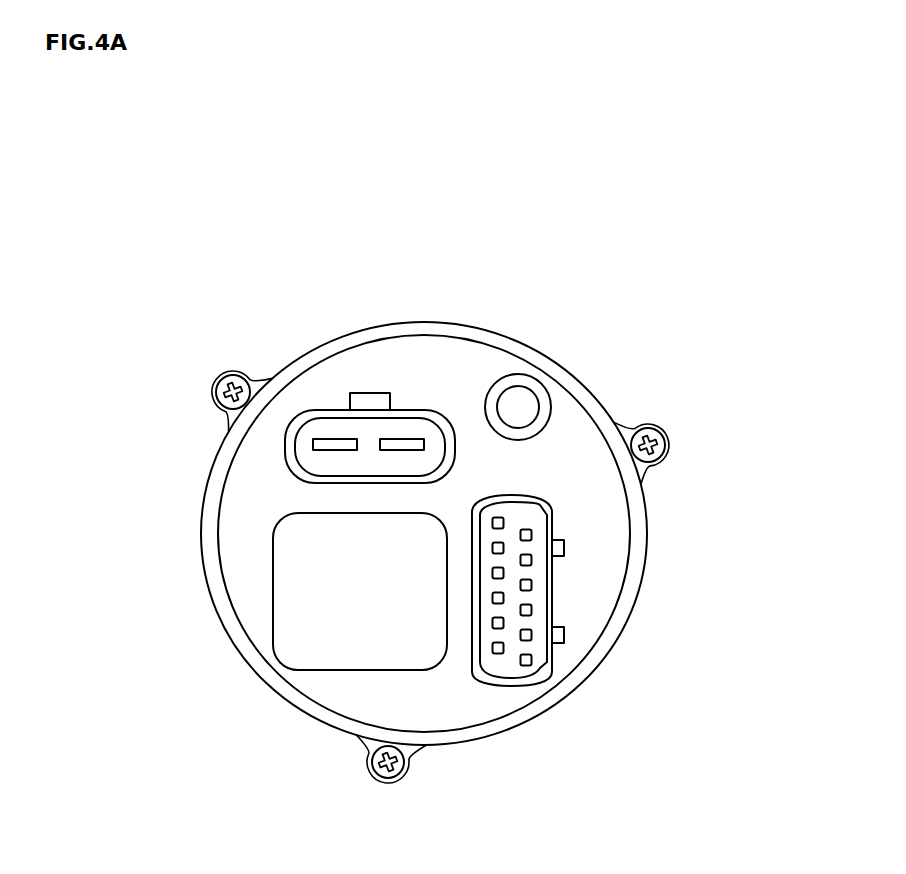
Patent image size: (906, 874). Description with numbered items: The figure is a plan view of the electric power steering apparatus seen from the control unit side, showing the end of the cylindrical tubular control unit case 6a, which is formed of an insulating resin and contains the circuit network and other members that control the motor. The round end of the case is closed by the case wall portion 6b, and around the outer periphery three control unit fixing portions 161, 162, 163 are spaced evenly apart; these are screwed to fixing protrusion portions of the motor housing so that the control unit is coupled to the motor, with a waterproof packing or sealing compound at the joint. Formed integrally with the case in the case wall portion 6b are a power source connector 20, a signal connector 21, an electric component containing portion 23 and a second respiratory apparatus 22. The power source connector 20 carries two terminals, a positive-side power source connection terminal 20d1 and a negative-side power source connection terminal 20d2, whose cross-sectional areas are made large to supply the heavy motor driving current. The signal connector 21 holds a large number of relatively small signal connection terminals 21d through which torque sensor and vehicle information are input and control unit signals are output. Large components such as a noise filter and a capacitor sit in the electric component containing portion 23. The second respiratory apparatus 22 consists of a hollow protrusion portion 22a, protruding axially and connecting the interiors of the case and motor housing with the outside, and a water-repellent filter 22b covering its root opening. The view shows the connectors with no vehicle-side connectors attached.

The control unit case 6a is at (290, 362).
The case wall portion 6b is at (253, 558).
The power source connector 20 is at (428, 410).
The positive-side power source connection terminal 20d1 is at (327, 440).
The negative-side power source connection terminal 20d2 is at (407, 440).
The signal connector 21 is at (550, 670).
The signal connection terminal 21d is at (528, 587).
The second respiratory apparatus 22 is at (642, 256).
The hollow protrusion portion 22a is at (548, 388).
The filter 22b is at (518, 407).
The electric component containing portion 23 is at (347, 638).
The control unit fixing portion 161 is at (625, 425).
The control unit fixing portion 162 is at (410, 753).
The control unit fixing portion 163 is at (228, 420).